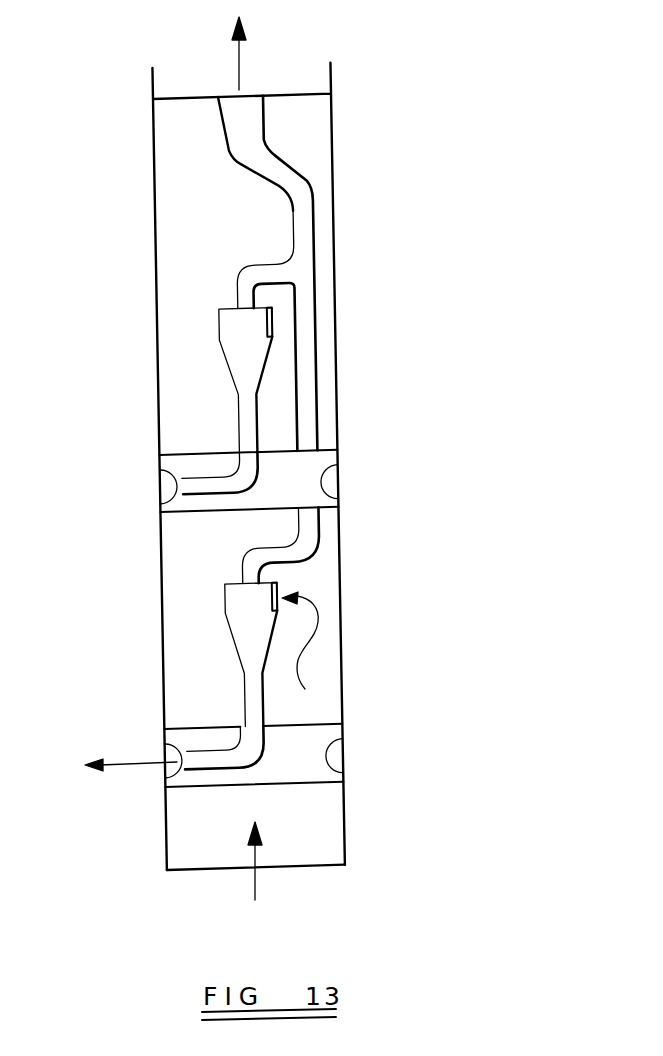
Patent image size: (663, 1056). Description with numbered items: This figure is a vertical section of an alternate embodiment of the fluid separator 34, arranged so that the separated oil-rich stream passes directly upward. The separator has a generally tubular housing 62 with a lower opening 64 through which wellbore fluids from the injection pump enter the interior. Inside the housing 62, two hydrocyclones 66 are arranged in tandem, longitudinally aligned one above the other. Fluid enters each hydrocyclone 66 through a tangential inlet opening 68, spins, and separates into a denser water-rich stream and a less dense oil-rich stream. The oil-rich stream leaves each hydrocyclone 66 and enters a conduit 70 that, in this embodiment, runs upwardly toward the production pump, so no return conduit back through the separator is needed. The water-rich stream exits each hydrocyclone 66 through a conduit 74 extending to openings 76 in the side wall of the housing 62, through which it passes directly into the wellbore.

The fluid separator 34 is at (498, 283).
The housing 62 is at (333, 152).
The lower opening 64 is at (327, 850).
The hydrocyclone 66 is at (222, 350).
The tangential inlet opening 68 is at (272, 322).
The conduit 70 is at (250, 118).
The conduit 74 is at (240, 422).
The openings 76 is at (333, 482).